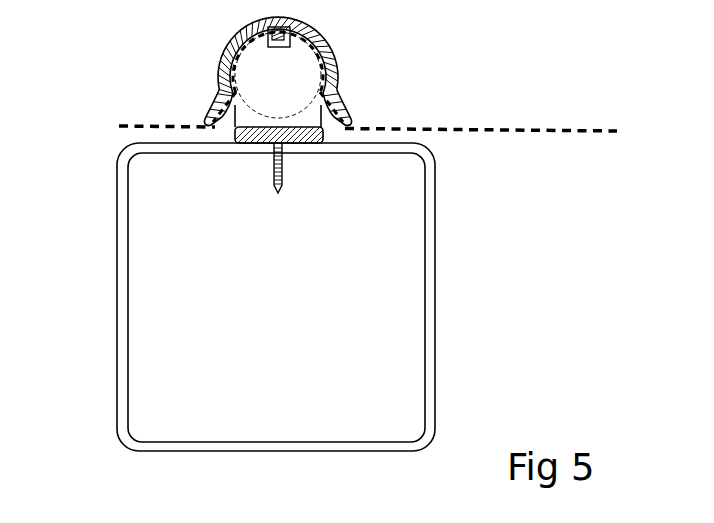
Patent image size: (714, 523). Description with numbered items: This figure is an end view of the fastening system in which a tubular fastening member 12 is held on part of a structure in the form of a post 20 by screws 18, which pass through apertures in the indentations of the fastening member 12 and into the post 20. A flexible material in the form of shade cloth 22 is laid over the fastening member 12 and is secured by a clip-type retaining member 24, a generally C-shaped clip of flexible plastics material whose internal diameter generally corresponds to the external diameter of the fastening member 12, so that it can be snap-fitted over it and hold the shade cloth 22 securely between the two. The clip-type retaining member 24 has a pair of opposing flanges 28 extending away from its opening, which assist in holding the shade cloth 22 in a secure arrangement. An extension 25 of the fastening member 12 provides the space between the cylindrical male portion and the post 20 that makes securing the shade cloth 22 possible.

The fastening member 12 is at (307, 70).
The screws 18 is at (276, 168).
The post 20 is at (118, 256).
The shade cloth 22 is at (538, 128).
The clip-type retaining member 24 is at (322, 32).
The extension 25 is at (328, 125).
The flanges 28 is at (345, 118).